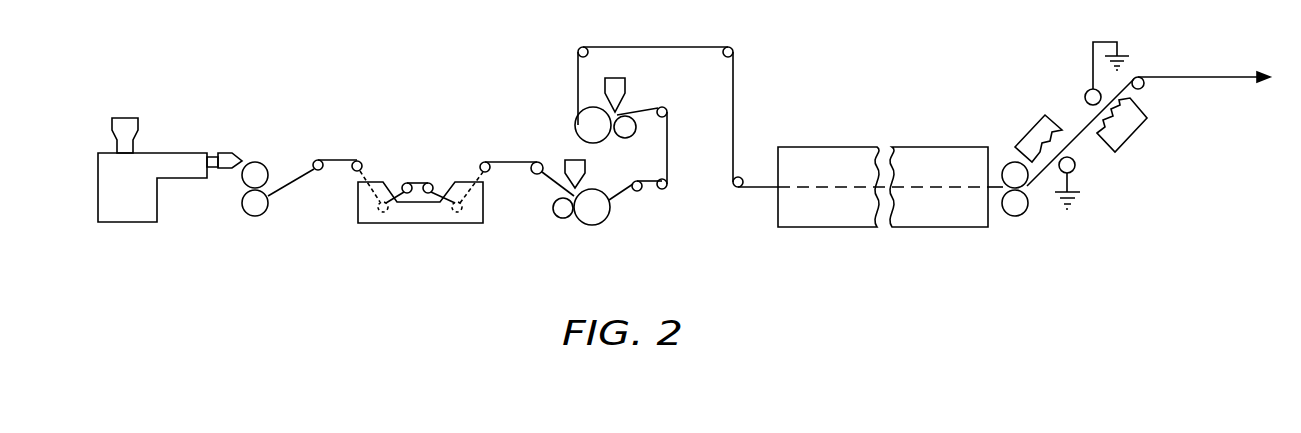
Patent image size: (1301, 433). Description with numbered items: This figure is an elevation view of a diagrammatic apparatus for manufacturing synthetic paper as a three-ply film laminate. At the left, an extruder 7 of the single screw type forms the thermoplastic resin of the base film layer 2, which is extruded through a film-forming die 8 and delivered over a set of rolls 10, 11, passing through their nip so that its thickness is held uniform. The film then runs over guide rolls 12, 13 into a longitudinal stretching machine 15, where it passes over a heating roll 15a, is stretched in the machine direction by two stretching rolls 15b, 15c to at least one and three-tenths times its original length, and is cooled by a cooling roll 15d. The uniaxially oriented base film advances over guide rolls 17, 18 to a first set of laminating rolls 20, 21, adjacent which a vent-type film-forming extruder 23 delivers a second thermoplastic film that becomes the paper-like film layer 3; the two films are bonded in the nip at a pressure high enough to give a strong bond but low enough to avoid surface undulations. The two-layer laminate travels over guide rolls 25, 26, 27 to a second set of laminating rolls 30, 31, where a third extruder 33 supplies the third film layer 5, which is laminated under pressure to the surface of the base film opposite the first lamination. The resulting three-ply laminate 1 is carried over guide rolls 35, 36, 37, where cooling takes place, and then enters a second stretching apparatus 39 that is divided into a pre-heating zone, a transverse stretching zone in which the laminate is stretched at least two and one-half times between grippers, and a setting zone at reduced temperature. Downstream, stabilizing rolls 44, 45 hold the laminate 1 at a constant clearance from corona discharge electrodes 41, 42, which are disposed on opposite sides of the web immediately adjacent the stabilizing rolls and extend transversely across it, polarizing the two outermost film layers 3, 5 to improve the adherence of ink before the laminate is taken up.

The three-ply laminate 1 is at (734, 112).
The base film layer 2 is at (290, 190).
The paper-like film layer 3 is at (578, 188).
The third film layer 5 is at (626, 113).
The extruder 7 is at (123, 213).
The film-forming die 8 is at (230, 150).
The roll 10 is at (245, 177).
The roll 11 is at (252, 210).
The guide roll 12 is at (318, 158).
The guide roll 13 is at (366, 136).
The longitudinal stretching machine 15 is at (420, 202).
The heating roll 15a is at (380, 214).
The stretching roll 15b is at (407, 183).
The stretching roll 15c is at (433, 184).
The cooling roll 15d is at (455, 214).
The guide roll 17 is at (491, 160).
The guide roll 18 is at (536, 175).
The laminating roll 20 is at (562, 218).
The laminating roll 21 is at (590, 225).
The film-forming extruder 23 is at (576, 160).
The guide roll 25 is at (634, 192).
The guide roll 26 is at (666, 188).
The guide roll 27 is at (667, 108).
The laminating roll 30 is at (626, 138).
The laminating roll 31 is at (580, 121).
The third extruder 33 is at (615, 78).
The guide roll 35 is at (578, 52).
The guide roll 36 is at (733, 50).
The guide roll 37 is at (743, 177).
The second stretching apparatus 39 is at (918, 220).
The electrode 41 is at (1058, 98).
The electrode 42 is at (1127, 137).
The stabilizing roll 44 is at (1008, 166).
The stabilizing roll 45 is at (1013, 213).